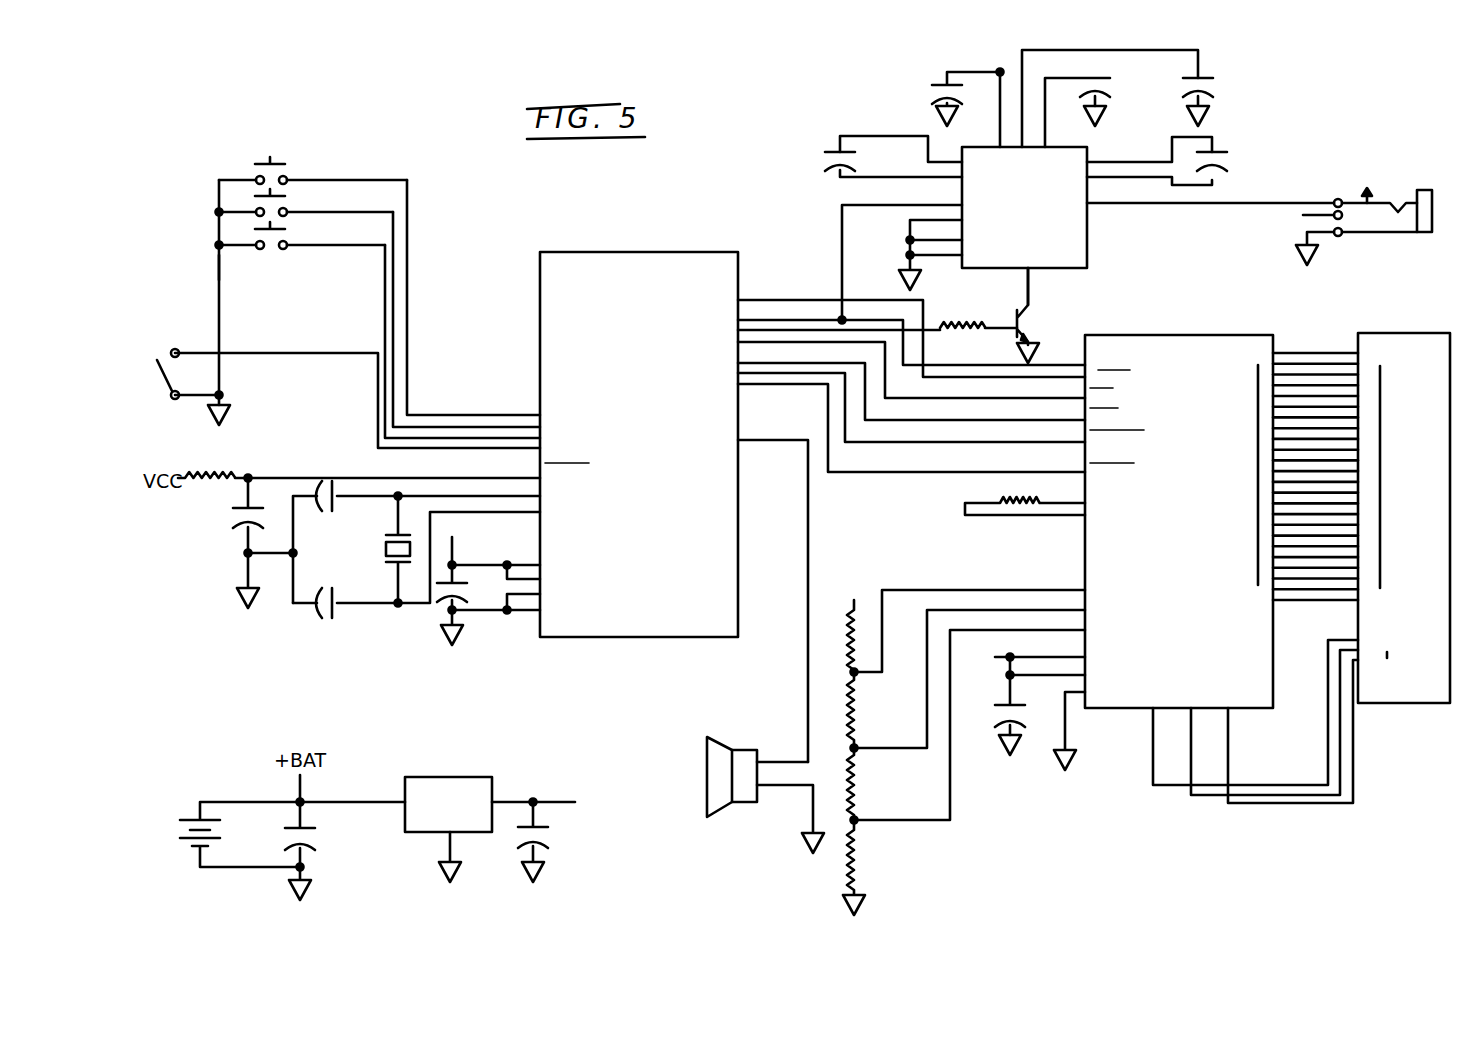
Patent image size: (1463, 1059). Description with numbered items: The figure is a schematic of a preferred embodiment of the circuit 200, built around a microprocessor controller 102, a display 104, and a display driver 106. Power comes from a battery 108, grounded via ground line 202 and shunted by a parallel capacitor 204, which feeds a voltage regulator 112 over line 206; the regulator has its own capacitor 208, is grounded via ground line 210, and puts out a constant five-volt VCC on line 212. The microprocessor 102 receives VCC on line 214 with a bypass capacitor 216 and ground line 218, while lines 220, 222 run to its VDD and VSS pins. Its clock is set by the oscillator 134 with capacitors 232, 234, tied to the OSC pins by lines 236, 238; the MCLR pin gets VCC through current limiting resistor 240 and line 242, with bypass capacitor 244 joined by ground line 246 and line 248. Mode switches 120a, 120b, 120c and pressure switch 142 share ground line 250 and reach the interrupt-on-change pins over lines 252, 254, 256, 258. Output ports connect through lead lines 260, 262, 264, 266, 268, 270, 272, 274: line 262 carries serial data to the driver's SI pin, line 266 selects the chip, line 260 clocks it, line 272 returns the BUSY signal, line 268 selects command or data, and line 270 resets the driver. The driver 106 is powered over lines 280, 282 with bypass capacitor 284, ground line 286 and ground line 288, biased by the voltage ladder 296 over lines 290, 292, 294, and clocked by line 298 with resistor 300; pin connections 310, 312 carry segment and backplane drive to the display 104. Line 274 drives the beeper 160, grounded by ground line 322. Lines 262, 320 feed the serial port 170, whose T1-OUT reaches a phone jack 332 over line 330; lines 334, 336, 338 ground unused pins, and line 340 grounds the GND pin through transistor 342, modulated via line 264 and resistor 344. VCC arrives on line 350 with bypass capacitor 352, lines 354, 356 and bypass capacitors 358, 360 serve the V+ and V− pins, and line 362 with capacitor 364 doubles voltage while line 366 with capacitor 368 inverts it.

The microprocessor controller 102 is at (644, 252).
The display 104 is at (1377, 333).
The display driver 106 is at (1188, 335).
The battery 108 is at (194, 802).
The voltage regulator 112 is at (458, 777).
The mode switch 120a is at (285, 169).
The mode switch 120b is at (283, 212).
The mode switch 120c is at (285, 244).
The oscillator 134 is at (384, 547).
The pressure switch 142 is at (158, 360).
The beeper 160 is at (730, 750).
The serial port 170 is at (1087, 231).
The circuit 200 is at (1362, 35).
The ground line 202 is at (244, 871).
The capacitor 204 is at (306, 847).
The line 206 is at (362, 802).
The capacitor 208 is at (544, 841).
The ground line 210 is at (448, 848).
The line 212 is at (568, 802).
The line 214 is at (458, 549).
The bypass capacitor 216 is at (447, 600).
The ground line 218 is at (458, 652).
The line 220 is at (466, 579).
The line 222 is at (497, 612).
The capacitor 232 is at (317, 507).
The capacitor 234 is at (326, 616).
The line 236 is at (398, 493).
The line 238 is at (377, 605).
The current limiting resistor 240 is at (215, 476).
The line 242 is at (283, 478).
The bypass capacitor 244 is at (243, 521).
The ground line 246 is at (243, 554).
The line 248 is at (275, 557).
The ground line 250 is at (218, 268).
The line 252 is at (407, 208).
The line 254 is at (393, 260).
The line 256 is at (385, 310).
The line 258 is at (285, 353).
The lead line 260 is at (746, 298).
The lead line 262 is at (760, 318).
The lead line 264 is at (772, 328).
The lead line 266 is at (786, 340).
The lead line 268 is at (749, 365).
The lead line 270 is at (828, 420).
The lead line 272 is at (830, 475).
The lead line 274 is at (808, 552).
The line 280 is at (1056, 648).
The line 282 is at (1019, 691).
The bypass capacitor 284 is at (1002, 716).
The ground line 286 is at (1025, 740).
The ground line 288 is at (1075, 740).
The line 290 is at (880, 664).
The line 292 is at (863, 745).
The line 294 is at (873, 820).
The voltage ladder 296 is at (860, 705).
The line 298 is at (1011, 517).
The resistor 300 is at (1012, 505).
The pin connections 310 is at (1302, 344).
The pin connections 312 is at (1262, 808).
The line 320 is at (842, 232).
The ground line 322 is at (813, 819).
The line 330 is at (1265, 202).
The phone jack 332 is at (1386, 203).
The line 334 is at (910, 220).
The line 336 is at (932, 242).
The line 338 is at (946, 255).
The line 340 is at (1028, 290).
The transistor 342 is at (1028, 332).
The resistor 344 is at (954, 330).
The line 350 is at (1002, 78).
The bypass capacitor 352 is at (935, 84).
The line 354 is at (1130, 50).
The line 356 is at (1092, 83).
The bypass capacitor 358 is at (1210, 83).
The bypass capacitor 360 is at (1100, 98).
The line 362 is at (868, 136).
The capacitor 364 is at (830, 152).
The line 366 is at (1212, 136).
The capacitor 368 is at (1220, 155).